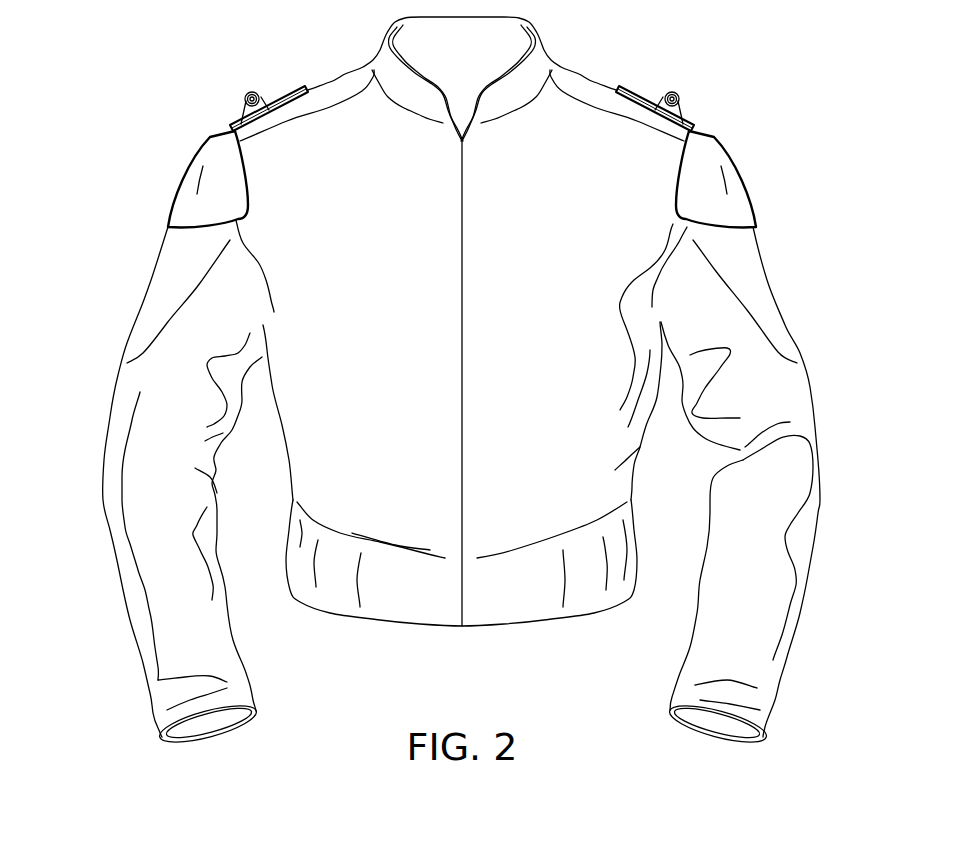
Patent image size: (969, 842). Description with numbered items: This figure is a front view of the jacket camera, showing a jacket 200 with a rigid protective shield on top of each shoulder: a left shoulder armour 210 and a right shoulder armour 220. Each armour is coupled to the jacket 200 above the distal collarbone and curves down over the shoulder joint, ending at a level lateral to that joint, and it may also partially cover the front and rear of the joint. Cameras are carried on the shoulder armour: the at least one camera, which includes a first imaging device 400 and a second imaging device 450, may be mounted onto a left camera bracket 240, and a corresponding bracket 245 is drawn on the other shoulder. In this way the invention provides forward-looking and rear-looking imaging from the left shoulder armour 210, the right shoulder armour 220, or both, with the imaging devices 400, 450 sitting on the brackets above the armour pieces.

The jacket 200 is at (350, 307).
The left shoulder armour 210 is at (723, 173).
The right shoulder armour 220 is at (200, 188).
The left camera bracket 240 is at (620, 113).
The left shoulder mounting rail 245 is at (287, 121).
The first imaging device 400 is at (672, 92).
The second imaging device 450 is at (252, 92).